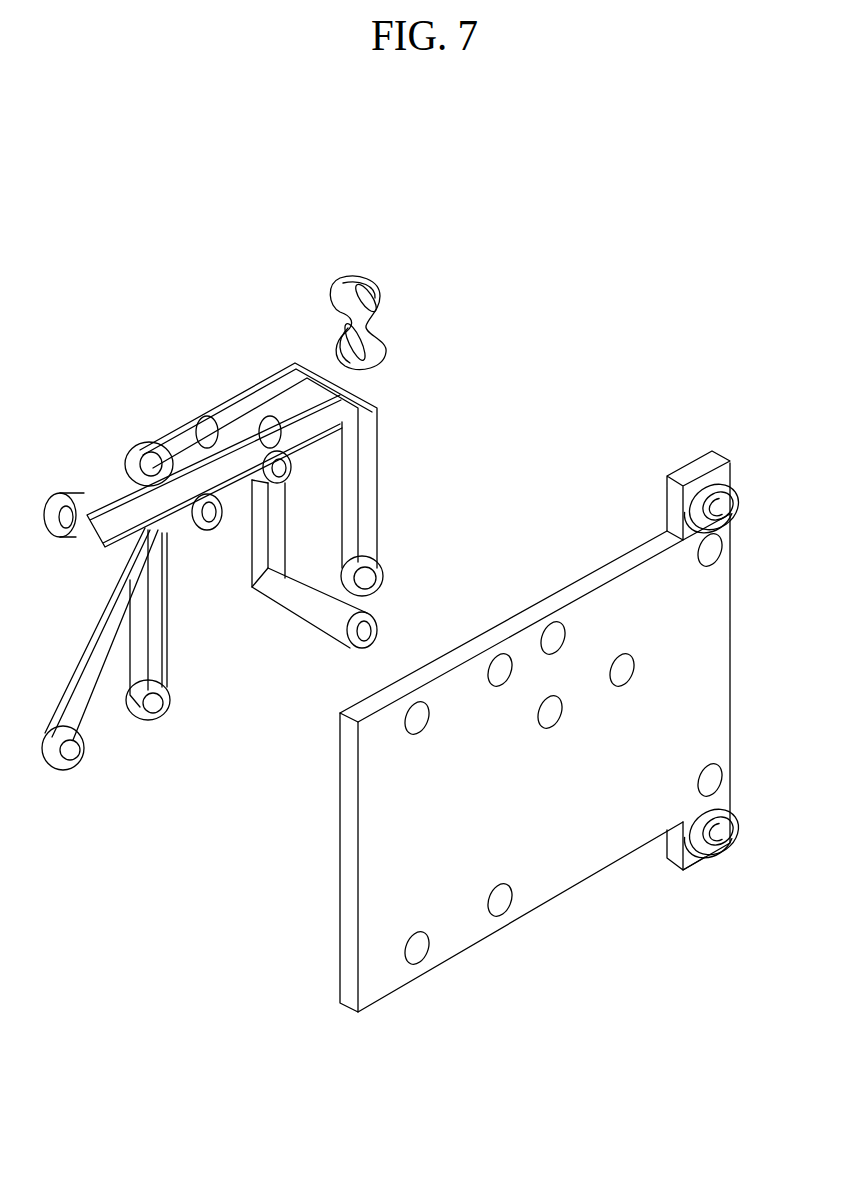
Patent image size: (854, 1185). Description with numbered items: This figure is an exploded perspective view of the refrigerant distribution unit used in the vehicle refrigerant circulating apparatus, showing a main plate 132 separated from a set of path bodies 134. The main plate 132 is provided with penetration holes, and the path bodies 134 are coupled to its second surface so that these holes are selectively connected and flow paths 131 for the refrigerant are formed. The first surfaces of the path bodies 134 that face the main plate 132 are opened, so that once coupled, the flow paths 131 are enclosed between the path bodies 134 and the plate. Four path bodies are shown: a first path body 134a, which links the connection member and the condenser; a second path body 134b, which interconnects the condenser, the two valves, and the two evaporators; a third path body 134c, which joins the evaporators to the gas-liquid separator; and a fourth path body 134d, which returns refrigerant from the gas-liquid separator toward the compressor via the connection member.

The flow paths 131 is at (213, 478).
The main plate 132 is at (705, 673).
The path body 134 is at (697, 256).
The first path body 134a is at (378, 311).
The second path body 134b is at (380, 440).
The third path body 134c is at (103, 718).
The fourth path body 134d is at (345, 605).